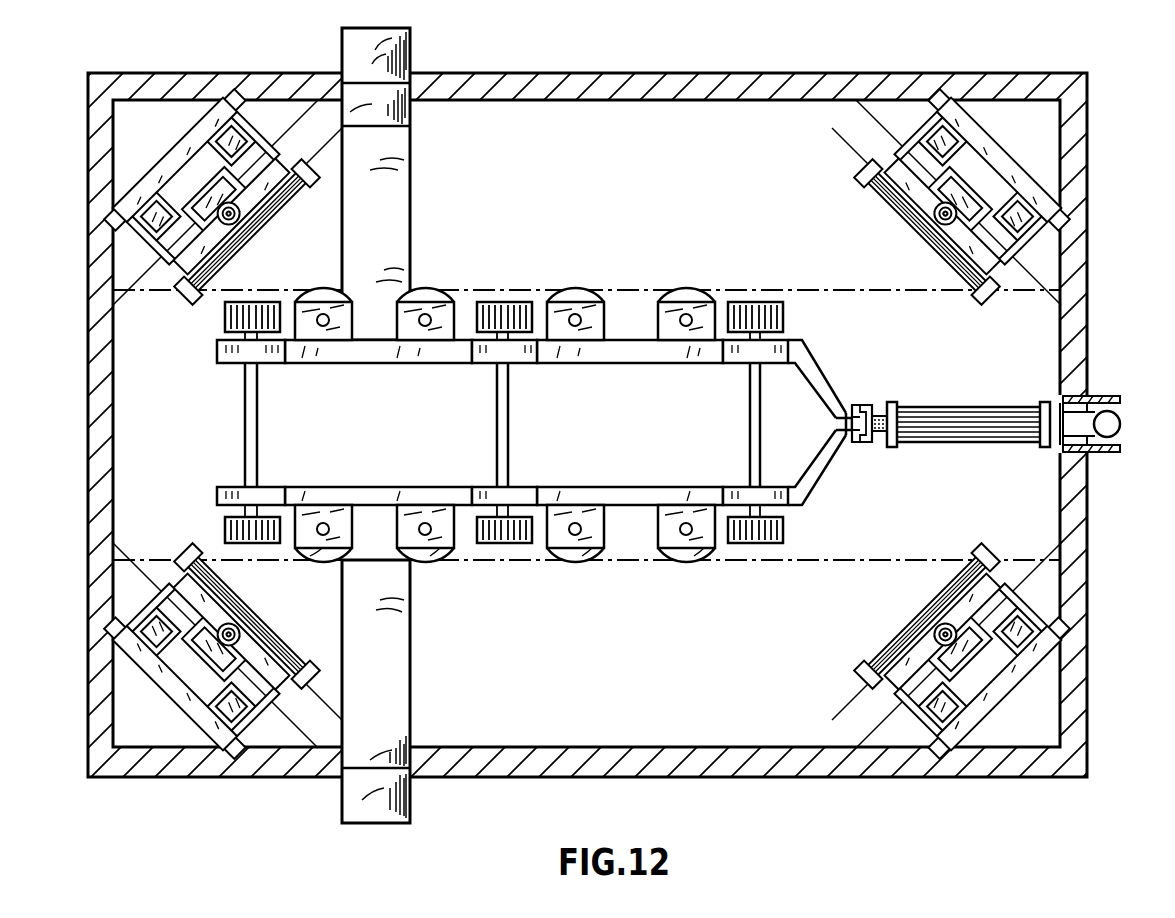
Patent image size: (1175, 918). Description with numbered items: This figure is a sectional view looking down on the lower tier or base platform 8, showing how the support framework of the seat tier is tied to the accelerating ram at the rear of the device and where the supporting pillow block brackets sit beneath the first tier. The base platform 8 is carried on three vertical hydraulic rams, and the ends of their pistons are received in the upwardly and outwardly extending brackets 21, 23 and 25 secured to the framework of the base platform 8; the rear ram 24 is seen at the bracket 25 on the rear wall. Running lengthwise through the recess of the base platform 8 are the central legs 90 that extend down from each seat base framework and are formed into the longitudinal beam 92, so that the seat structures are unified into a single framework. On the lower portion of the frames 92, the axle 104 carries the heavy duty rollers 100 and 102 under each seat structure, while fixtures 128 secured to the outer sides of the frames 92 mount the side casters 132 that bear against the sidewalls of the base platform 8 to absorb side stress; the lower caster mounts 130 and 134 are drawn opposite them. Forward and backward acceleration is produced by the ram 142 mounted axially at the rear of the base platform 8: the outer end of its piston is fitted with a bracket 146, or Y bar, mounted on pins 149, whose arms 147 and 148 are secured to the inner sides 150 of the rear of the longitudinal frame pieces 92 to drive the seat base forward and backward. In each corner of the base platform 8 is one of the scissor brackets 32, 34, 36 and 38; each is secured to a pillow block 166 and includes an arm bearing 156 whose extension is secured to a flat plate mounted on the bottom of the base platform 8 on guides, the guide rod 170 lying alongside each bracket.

The base platform 8 is at (88, 520).
The bracket 21 is at (395, 62).
The bracket 23 is at (410, 812).
The hydraulic ram 24 is at (1120, 424).
The bracket 25 is at (1104, 395).
The scissor bracket 32 is at (247, 196).
The corner gripper assembly 34 is at (170, 710).
The corner gripper assembly 36 is at (998, 710).
The corner gripper assembly 38 is at (1004, 146).
The central legs 90 is at (472, 362).
The longitudinal beam 92 is at (330, 366).
The heavy duty roller 100 is at (225, 321).
The heavy duty roller 102 is at (225, 526).
The axle 104 is at (770, 424).
The fixture 128 is at (410, 322).
The lower block 130 is at (410, 524).
The side caster 132 is at (687, 295).
The lower block dome 134 is at (318, 558).
The ram 142 is at (930, 406).
The bracket 146 is at (862, 404).
The arm 147 is at (818, 372).
The arm 148 is at (828, 475).
The pin 149 is at (866, 444).
The inner side 150 is at (844, 424).
The arm bearing 156 is at (240, 214).
The pillow block 166 is at (318, 178).
The guide rod 170 is at (242, 240).